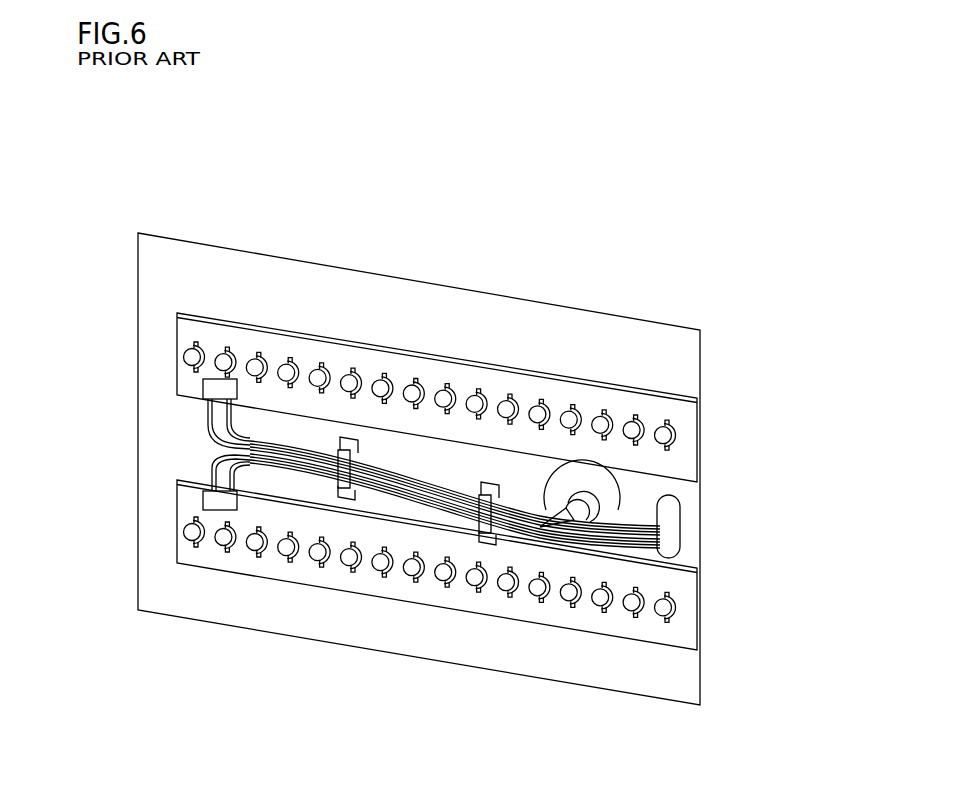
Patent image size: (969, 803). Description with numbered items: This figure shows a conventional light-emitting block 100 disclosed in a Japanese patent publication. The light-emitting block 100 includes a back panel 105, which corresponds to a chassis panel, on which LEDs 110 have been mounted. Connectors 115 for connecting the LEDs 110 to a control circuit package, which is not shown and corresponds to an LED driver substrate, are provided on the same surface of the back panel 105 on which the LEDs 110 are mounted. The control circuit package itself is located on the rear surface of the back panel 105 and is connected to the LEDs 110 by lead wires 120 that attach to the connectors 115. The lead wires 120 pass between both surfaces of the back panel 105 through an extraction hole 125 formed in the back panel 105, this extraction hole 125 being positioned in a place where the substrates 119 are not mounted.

The light-emitting block 100 is at (503, 234).
The back panel 105 is at (165, 602).
The LEDs 110 is at (221, 343).
The connectors 115 is at (203, 494).
The substrates 119 is at (688, 448).
The lead wires 120 is at (295, 460).
The extraction hole 125 is at (680, 540).